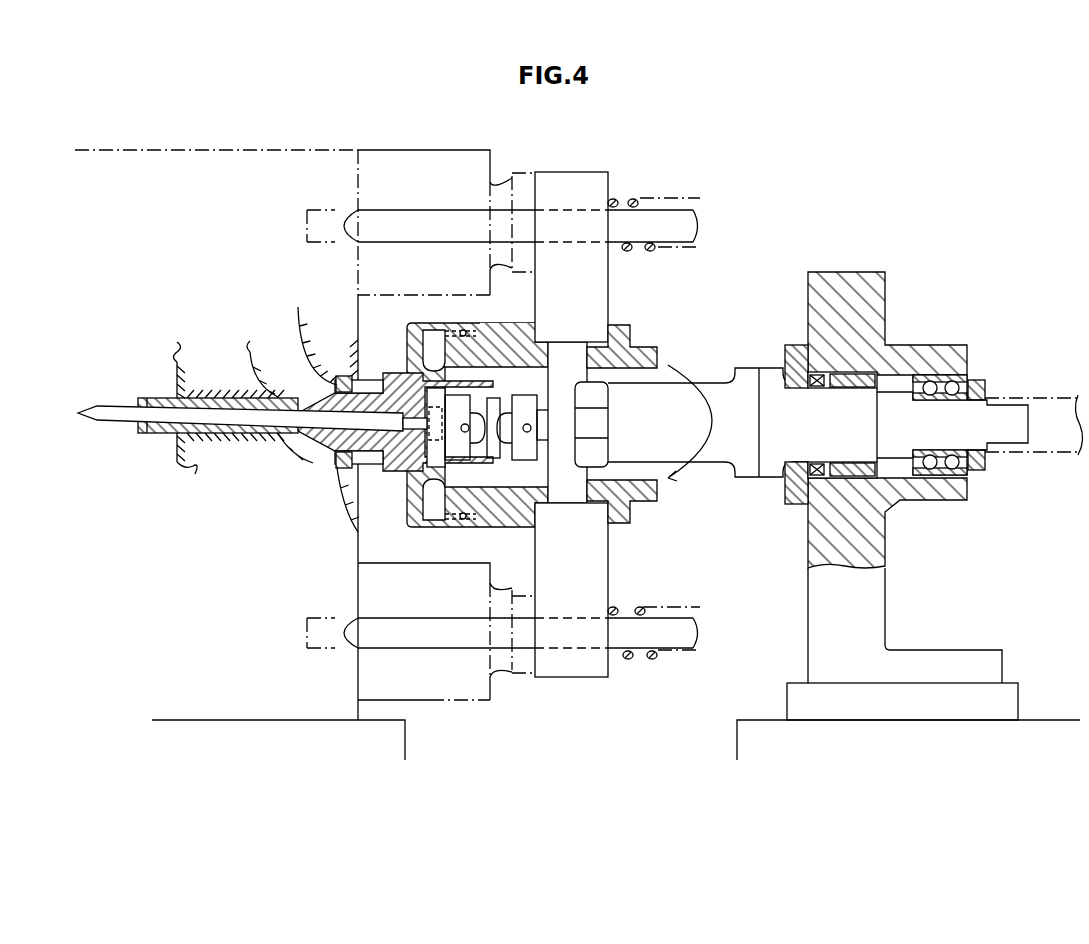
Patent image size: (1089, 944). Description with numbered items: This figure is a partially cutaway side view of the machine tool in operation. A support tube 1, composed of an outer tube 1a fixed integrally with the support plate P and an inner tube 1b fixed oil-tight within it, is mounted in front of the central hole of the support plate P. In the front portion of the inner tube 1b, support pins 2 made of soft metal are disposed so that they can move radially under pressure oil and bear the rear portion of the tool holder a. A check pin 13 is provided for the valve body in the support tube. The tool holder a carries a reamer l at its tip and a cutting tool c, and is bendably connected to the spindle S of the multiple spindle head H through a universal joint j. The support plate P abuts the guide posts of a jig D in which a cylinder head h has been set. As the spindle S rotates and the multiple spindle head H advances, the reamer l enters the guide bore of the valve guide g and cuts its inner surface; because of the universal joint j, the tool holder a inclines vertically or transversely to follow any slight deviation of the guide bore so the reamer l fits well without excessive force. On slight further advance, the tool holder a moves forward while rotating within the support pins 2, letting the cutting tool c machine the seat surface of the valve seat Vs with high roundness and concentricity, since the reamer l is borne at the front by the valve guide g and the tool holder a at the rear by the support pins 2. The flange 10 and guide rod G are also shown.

The jig D is at (265, 168).
The support tube 1 is at (475, 323).
The outer tube 1a is at (508, 325).
The inner tube 1b is at (492, 352).
The support pins 2 is at (435, 350).
The tool holder a is at (312, 458).
The valve seat Vs is at (333, 470).
The cutting tool c is at (352, 470).
The reamer l is at (227, 437).
The valve guide g is at (250, 432).
The cylinder head h is at (212, 360).
The universal joint j is at (497, 443).
The support plate P is at (597, 172).
The flange 10 is at (637, 343).
The guide rod G is at (673, 210).
The spindle S is at (733, 435).
The multiple spindle head H is at (862, 316).
The check pin 13 is at (1003, 702).